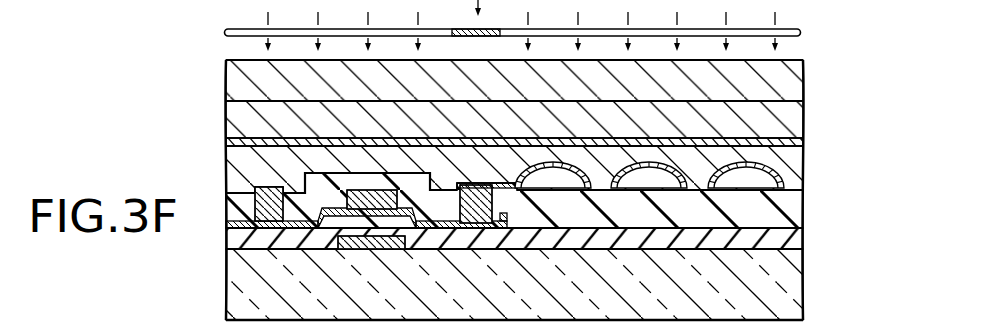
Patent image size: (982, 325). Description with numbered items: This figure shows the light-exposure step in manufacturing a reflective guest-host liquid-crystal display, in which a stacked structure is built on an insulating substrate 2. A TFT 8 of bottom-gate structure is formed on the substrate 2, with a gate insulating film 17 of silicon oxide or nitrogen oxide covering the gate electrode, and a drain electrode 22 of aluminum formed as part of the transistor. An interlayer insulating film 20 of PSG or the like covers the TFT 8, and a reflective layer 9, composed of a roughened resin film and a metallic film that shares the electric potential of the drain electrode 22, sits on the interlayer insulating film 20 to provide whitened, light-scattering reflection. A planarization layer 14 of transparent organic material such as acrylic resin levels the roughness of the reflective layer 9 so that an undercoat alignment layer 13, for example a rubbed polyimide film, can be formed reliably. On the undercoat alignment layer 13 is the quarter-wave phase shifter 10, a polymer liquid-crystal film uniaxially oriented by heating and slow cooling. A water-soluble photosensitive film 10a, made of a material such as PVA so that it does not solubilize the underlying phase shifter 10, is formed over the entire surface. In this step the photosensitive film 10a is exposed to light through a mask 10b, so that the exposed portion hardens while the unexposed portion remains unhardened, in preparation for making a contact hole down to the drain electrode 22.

The insulating substrate 2 is at (783, 282).
The TFT 8 is at (353, 250).
The reflective layer 9 is at (787, 190).
The λ/4 phase shifter 10 is at (780, 122).
The photosensitive film 10a is at (783, 80).
The mask plate 10b is at (797, 33).
The undercoat alignment layer 13 is at (790, 142).
The planarization layer 14 is at (783, 160).
The gate insulating film 17 is at (800, 242).
The interlayer insulating film 20 is at (793, 212).
The drain electrode 22 is at (477, 186).